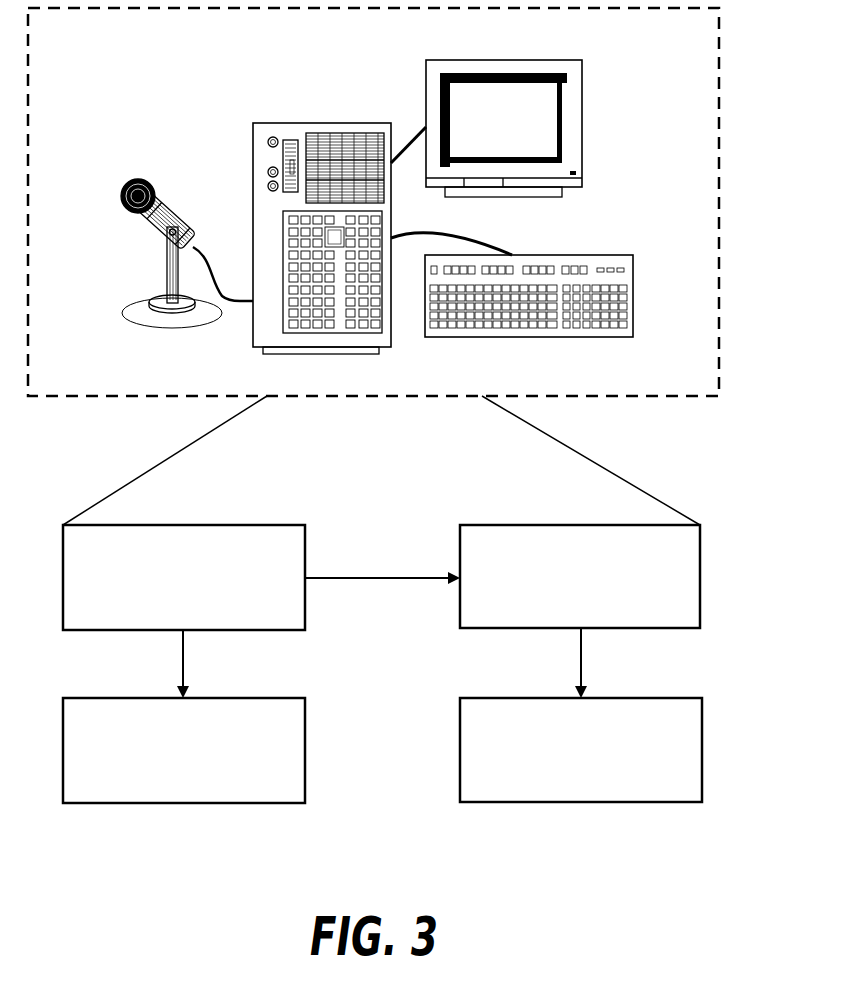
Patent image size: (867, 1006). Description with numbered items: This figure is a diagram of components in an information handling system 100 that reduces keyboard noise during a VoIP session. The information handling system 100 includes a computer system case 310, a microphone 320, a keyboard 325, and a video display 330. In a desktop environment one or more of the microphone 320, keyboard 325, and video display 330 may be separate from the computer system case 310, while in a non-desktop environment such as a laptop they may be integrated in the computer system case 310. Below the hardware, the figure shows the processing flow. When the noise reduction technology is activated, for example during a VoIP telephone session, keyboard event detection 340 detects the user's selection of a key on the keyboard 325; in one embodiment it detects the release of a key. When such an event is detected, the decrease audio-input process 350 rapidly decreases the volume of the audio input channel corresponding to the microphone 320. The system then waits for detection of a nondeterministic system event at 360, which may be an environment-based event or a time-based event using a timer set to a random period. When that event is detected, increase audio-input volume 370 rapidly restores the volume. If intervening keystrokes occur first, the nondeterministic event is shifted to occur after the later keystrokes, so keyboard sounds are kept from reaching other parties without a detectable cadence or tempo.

The information handling system 100 is at (358, 68).
The computer system case 310 is at (320, 123).
The microphone 320 is at (187, 240).
The keyboard 325 is at (523, 273).
The video display 330 is at (523, 128).
The keyboard event detection 340 is at (167, 601).
The decrease audio-input process 350 is at (168, 788).
The nondeterministic system event detection 360 is at (564, 613).
The increase audio-input volume 370 is at (565, 788).